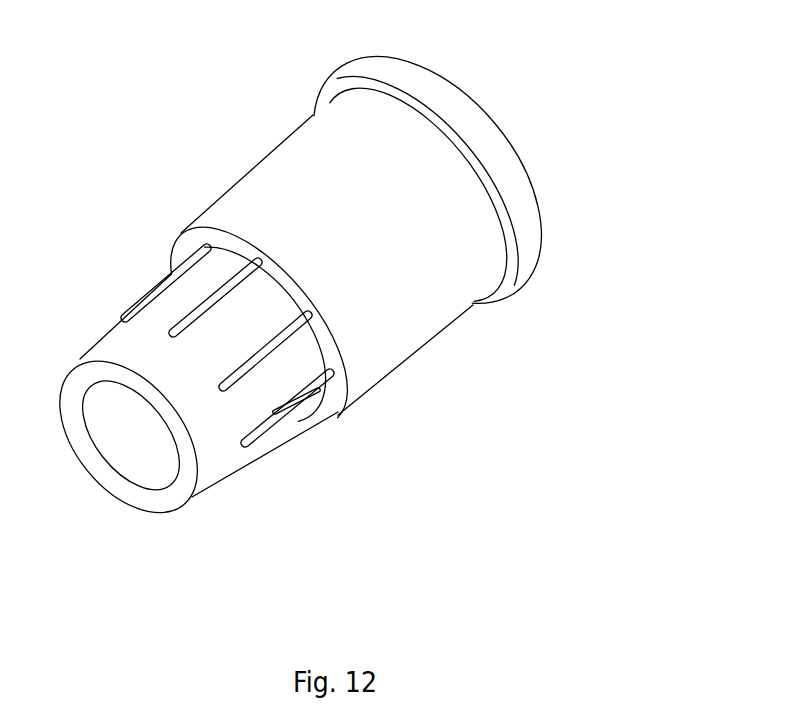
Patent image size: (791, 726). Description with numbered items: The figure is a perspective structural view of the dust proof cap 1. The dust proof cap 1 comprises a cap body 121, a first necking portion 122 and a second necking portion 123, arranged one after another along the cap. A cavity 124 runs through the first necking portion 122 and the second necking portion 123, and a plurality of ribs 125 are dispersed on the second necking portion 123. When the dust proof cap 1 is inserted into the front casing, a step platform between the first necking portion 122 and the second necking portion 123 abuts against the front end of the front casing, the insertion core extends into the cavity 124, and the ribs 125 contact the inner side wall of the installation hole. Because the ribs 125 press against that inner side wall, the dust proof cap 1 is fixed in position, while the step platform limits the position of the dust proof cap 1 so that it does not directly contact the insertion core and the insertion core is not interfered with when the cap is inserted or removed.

The dust proof cap 1 is at (338, 29).
The cap body 121 is at (545, 229).
The first necking portion 122 is at (288, 172).
The second necking portion 123 is at (212, 418).
The cavity 124 is at (127, 423).
The ribs 125 is at (263, 350).